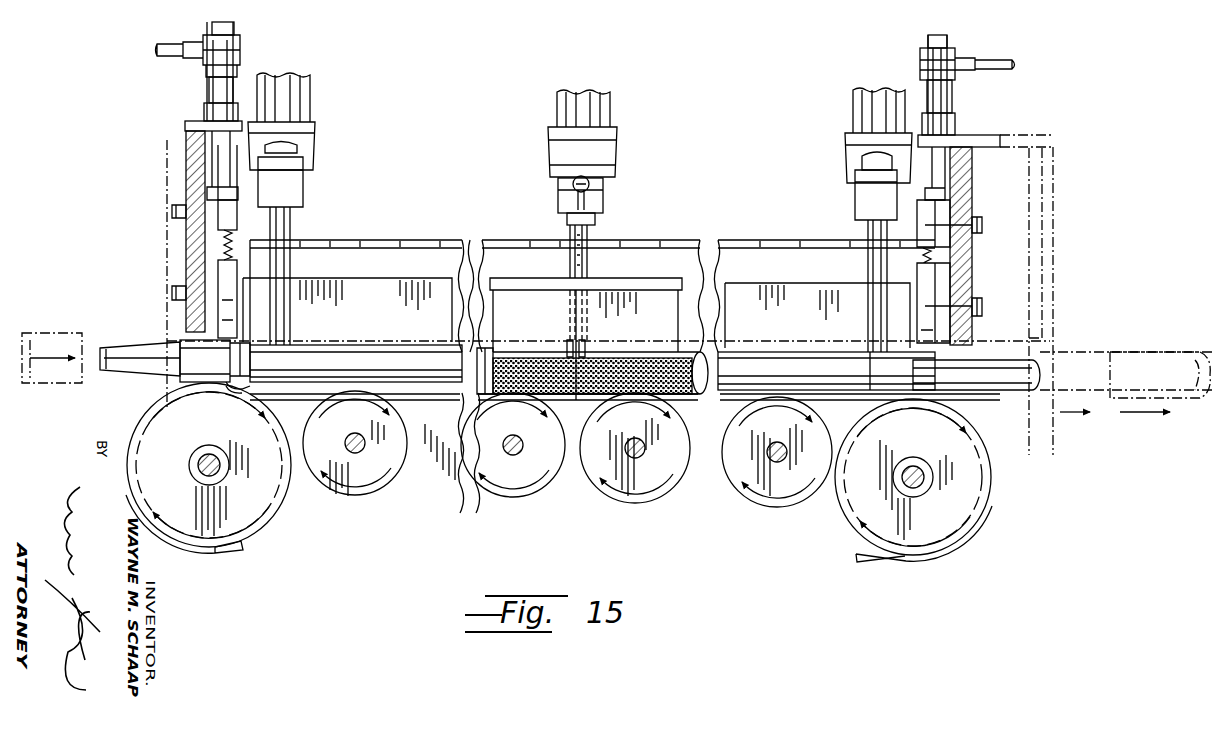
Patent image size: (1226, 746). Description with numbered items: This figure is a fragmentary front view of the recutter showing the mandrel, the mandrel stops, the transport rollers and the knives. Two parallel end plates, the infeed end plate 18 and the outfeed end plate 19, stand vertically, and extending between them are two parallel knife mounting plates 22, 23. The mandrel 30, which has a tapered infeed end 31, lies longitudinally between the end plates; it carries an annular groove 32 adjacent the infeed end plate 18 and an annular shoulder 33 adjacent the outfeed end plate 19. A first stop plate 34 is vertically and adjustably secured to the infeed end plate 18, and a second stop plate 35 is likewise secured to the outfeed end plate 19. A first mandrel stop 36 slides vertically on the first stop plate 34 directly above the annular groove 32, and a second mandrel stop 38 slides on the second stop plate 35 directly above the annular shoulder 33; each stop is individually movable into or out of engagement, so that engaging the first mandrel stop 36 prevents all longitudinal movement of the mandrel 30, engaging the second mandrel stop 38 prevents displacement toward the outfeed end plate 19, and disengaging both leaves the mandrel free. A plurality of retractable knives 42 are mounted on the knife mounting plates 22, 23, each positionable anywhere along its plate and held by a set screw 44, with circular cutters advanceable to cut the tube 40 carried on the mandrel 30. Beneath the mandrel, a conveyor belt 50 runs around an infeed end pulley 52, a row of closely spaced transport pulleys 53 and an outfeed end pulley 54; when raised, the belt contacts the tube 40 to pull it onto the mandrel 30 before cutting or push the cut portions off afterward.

The infeed end plate 18 is at (186, 156).
The outfeed end plate 19 is at (972, 178).
The knife mounting plate 22 is at (405, 285).
The knife mounting plate 23 is at (665, 295).
The mandrel 30 is at (185, 352).
The tapered infeed end 31 is at (106, 346).
The annular groove 32 is at (224, 388).
The annular shoulder 33 is at (925, 390).
The first stop plate 34 is at (222, 226).
The second stop plate 35 is at (946, 250).
The first mandrel stop 36 is at (224, 262).
The second mandrel stop 38 is at (940, 280).
The tube 40 is at (668, 388).
The retractable knife 42 is at (310, 128).
The set screw 44 is at (603, 200).
The conveyor belt 50 is at (888, 565).
The infeed end pulley 52 is at (262, 513).
The transport pulley 53 is at (352, 495).
The outfeed end pulley 54 is at (862, 512).